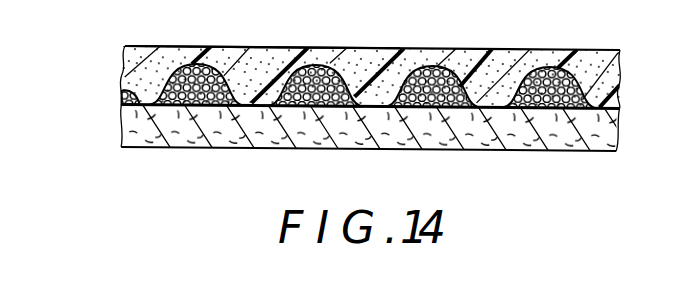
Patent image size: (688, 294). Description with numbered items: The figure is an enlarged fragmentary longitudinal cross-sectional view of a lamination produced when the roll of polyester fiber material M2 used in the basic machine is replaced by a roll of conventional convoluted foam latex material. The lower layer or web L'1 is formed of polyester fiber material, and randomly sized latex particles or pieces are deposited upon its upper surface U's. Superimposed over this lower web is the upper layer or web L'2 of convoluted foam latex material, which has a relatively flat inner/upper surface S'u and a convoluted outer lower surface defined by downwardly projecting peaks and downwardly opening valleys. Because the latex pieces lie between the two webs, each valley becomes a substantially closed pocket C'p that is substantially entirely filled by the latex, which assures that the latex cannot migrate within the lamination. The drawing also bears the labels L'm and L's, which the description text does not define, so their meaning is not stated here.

The polyester fiber material M2 is at (242, 53).
The inner/upper surface S'u is at (262, 24).
The layer or web L'2 is at (406, 53).
The matrix layer L'm is at (372, 52).
The upper surface U's is at (332, 91).
The lower side L's is at (342, 163).
The lower layer or web L'1 is at (377, 157).
The closed pocket C'p is at (359, 140).